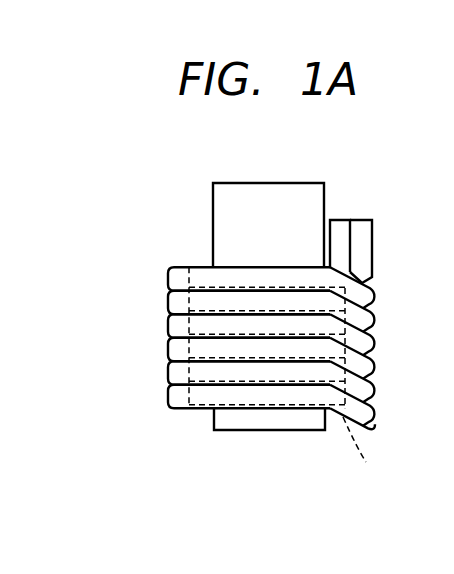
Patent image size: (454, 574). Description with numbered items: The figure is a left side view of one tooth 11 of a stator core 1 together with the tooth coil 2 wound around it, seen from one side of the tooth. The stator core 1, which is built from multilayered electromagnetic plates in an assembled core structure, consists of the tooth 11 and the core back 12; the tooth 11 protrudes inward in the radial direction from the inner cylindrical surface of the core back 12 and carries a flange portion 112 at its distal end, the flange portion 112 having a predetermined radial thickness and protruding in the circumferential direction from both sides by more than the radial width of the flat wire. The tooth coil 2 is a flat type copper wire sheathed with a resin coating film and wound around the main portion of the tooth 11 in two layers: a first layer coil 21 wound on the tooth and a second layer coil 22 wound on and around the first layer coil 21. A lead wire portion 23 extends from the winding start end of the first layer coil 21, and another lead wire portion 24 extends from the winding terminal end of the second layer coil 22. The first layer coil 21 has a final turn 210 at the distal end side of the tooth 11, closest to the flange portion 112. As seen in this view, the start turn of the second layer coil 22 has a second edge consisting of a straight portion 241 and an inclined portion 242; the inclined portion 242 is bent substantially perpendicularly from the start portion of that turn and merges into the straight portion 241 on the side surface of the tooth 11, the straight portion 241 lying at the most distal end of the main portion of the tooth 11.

The stator core 1 is at (318, 183).
The tooth coil 2 is at (163, 327).
The tooth 11 is at (327, 431).
The core back 12 is at (300, 198).
The first layer coil 21 is at (343, 417).
The second layer coil 22 is at (372, 422).
The lead wire portion 23 is at (338, 226).
The lead wire portion 24 is at (358, 245).
The flange portion 112 is at (222, 428).
The final turn 210 is at (200, 393).
The straight portion 241 is at (291, 412).
The inclined portion 242 is at (360, 402).